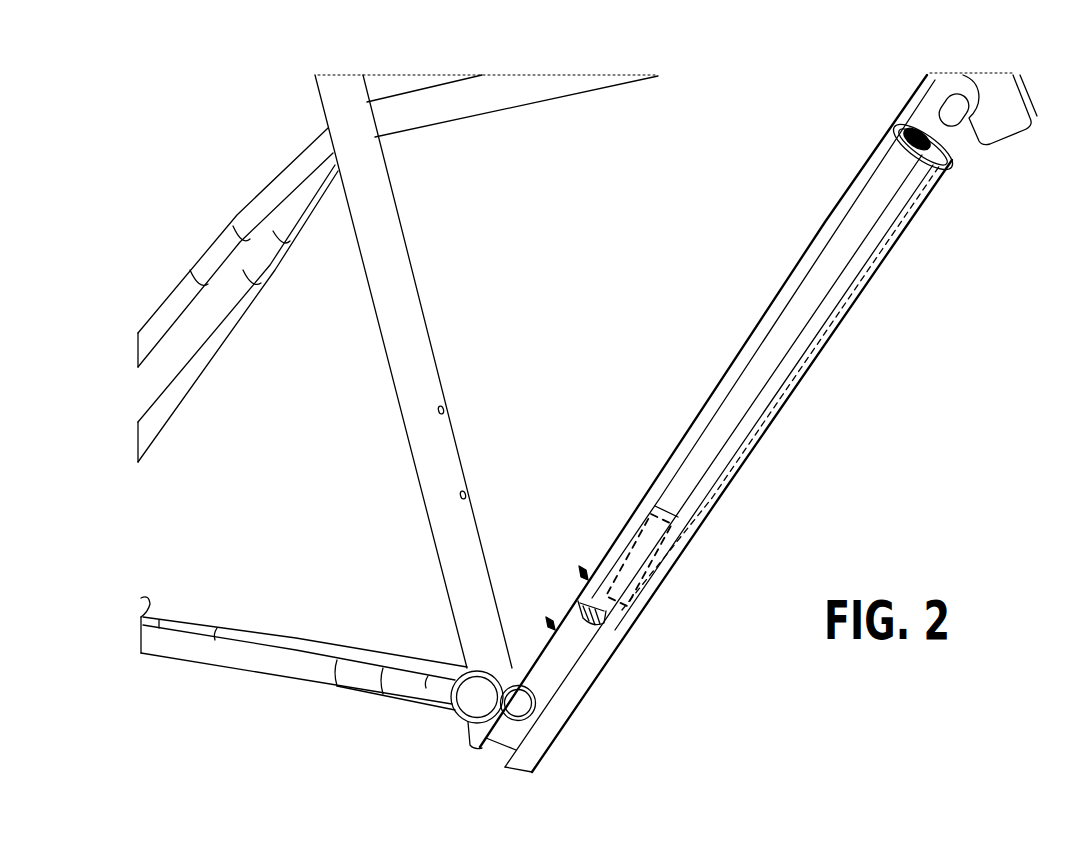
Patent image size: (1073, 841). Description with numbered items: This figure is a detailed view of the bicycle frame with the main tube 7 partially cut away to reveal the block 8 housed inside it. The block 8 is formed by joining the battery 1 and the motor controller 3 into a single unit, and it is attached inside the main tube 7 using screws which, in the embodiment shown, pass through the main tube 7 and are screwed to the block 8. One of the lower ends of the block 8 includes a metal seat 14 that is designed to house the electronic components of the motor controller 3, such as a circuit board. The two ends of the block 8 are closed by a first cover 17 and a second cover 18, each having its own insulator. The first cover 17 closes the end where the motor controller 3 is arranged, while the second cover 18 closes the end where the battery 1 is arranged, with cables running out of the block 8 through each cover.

The battery 1 is at (825, 222).
The block 8 is at (765, 332).
The motor controller 3 is at (643, 530).
The main tube 7 is at (565, 627).
The metal seat 14 is at (632, 560).
The first cover 17 is at (605, 625).
The second cover 18 is at (945, 165).